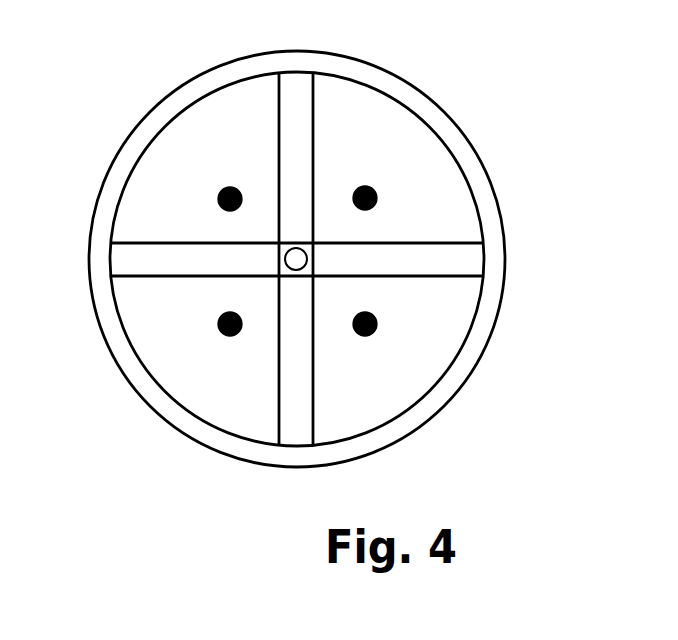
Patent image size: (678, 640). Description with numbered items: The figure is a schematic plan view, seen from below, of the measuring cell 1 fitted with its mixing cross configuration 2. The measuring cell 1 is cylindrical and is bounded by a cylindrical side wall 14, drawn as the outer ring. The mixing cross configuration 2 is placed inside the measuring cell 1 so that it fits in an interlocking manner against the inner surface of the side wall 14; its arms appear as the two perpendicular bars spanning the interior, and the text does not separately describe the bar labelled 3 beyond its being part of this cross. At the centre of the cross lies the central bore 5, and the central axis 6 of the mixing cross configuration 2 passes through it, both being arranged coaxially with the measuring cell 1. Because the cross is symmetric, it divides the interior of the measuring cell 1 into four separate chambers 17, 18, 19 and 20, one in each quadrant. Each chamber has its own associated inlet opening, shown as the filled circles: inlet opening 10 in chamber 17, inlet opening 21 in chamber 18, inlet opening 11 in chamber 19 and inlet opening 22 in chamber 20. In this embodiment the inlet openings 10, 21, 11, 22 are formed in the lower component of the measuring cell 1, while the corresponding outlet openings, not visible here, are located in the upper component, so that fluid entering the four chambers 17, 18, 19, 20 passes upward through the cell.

The measuring cell 1 is at (465, 82).
The mixing cross configuration 2 is at (487, 265).
The partition wall 3 is at (443, 255).
The central bore 5 is at (295, 252).
The central axis 6 is at (297, 268).
The inlet opening 10 is at (369, 190).
The inlet opening 11 is at (228, 324).
The cylindrical side wall 14 is at (497, 328).
The chamber 17 is at (370, 130).
The chamber 18 is at (388, 378).
The chamber 19 is at (203, 378).
The chamber 20 is at (165, 210).
The inlet opening 21 is at (367, 324).
The inlet opening 22 is at (229, 192).